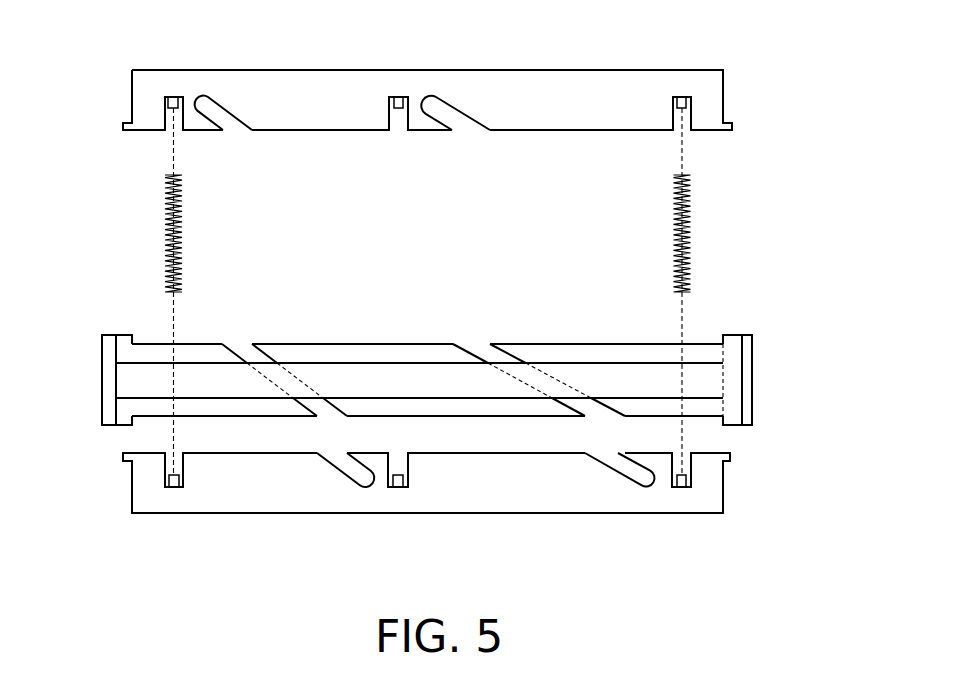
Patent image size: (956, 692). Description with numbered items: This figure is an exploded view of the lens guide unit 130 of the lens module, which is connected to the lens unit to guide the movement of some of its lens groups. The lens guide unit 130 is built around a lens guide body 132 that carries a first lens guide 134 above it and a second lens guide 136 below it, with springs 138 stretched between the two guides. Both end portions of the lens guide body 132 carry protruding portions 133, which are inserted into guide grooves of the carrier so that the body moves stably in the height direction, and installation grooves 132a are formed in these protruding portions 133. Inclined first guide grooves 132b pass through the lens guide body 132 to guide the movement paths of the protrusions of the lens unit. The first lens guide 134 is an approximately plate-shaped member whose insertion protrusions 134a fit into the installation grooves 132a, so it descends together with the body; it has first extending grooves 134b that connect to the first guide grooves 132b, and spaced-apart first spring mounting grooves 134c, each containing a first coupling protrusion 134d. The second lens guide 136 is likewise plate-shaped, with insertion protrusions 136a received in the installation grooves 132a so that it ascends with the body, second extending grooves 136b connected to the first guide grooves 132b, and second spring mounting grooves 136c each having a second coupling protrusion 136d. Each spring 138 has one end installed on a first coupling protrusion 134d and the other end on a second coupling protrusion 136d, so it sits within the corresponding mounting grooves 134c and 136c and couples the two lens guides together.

The lens guide unit 130 is at (380, 30).
The lens guide body 132 is at (620, 370).
The installation grooves 132a is at (733, 348).
The first guide grooves 132b is at (545, 380).
The protruding portions 133 is at (735, 425).
The first lens guide 134 is at (605, 85).
The insertion protrusions 134a is at (733, 126).
The first extending grooves 134b is at (465, 127).
The first spring mounting grooves 134c is at (168, 115).
The first coupling protrusion 134d is at (173, 97).
The second lens guide 136 is at (460, 495).
The insertion protrusions 136a is at (730, 455).
The second extending grooves 136b is at (607, 456).
The second spring mounting grooves 136c is at (691, 470).
The second coupling protrusion 136d is at (686, 492).
The springs 138 is at (168, 230).